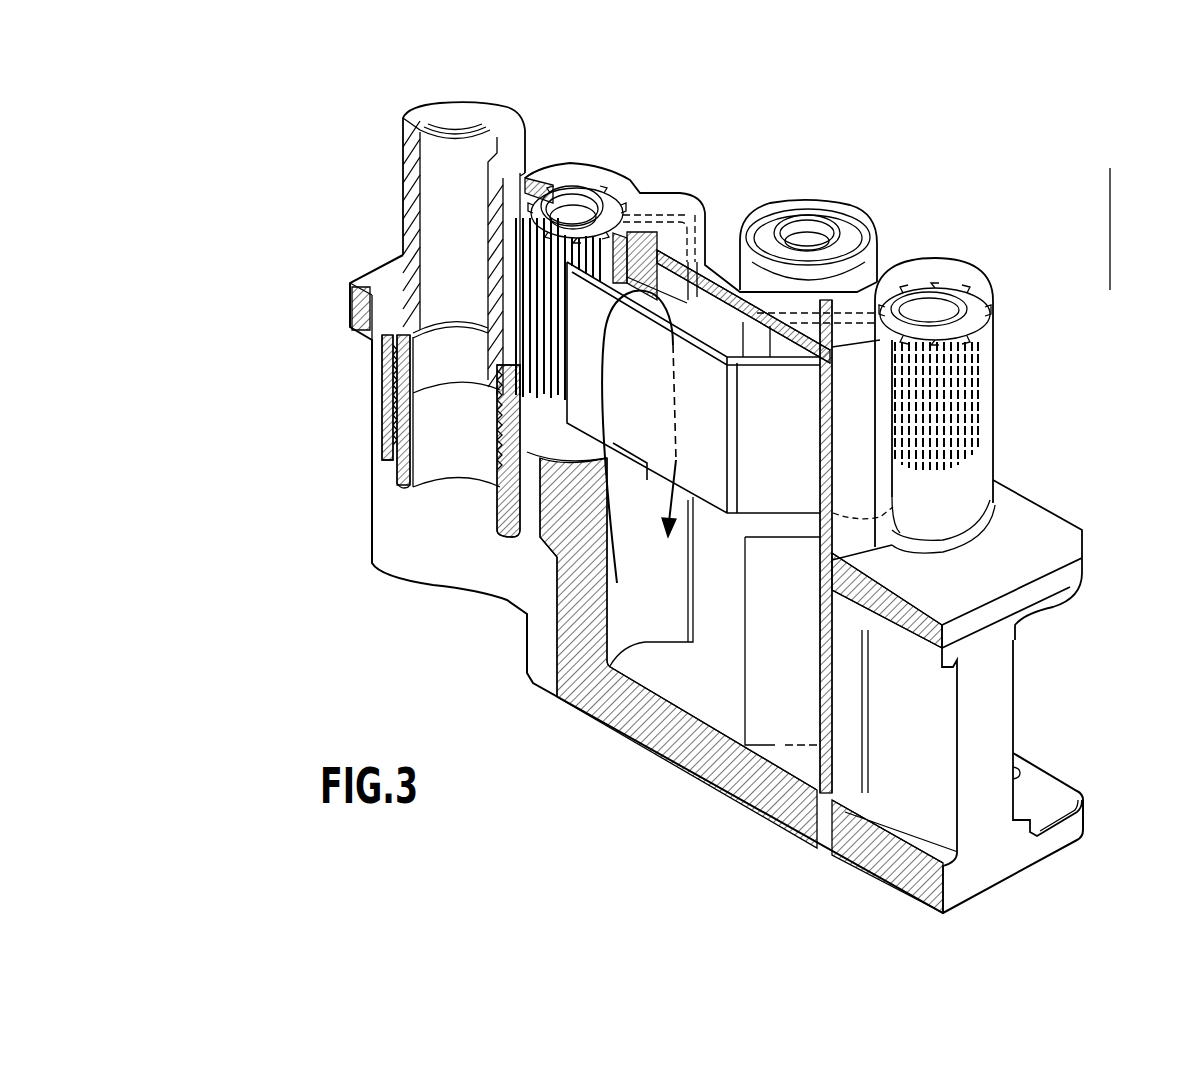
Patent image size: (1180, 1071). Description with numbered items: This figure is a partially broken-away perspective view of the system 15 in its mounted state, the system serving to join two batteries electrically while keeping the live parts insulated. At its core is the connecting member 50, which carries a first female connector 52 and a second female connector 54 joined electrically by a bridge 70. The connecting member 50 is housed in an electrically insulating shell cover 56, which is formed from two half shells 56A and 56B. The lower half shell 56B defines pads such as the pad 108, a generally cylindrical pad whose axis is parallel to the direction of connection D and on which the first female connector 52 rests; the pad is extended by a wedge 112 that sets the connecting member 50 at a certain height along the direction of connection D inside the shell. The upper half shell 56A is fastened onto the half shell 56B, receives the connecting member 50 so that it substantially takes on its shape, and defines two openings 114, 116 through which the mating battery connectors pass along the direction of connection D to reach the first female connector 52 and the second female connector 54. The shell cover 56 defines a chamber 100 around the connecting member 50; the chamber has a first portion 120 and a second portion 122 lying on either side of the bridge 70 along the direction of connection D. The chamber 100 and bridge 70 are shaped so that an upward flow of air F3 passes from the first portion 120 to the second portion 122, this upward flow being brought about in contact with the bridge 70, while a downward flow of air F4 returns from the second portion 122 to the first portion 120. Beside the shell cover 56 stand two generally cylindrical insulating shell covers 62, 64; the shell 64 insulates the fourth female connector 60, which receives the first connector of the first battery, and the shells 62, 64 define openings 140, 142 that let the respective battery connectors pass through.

The system 15 is at (312, 214).
The connecting member 50 is at (661, 427).
The first female connector 52 is at (573, 212).
The second female connector 54 is at (940, 300).
The shell cover 56 is at (302, 392).
The half shell 56A is at (1025, 545).
The half shell 56B is at (982, 717).
The fourth female connector 60 is at (800, 228).
The insulating shell cover 62 is at (490, 123).
The insulating shell cover 64 is at (849, 208).
The bridge 70 is at (693, 387).
The chamber 100 is at (646, 612).
The pad 108 is at (563, 493).
The wedge 112 is at (552, 428).
The opening 114 is at (606, 184).
The opening 116 is at (920, 280).
The first portion 120 is at (674, 633).
The second portion 122 is at (748, 326).
The opening 140 is at (441, 103).
The opening 142 is at (826, 215).
The upward flow of air F3 is at (606, 400).
The downward flow of air F4 is at (677, 447).
The direction of connection D is at (1110, 254).